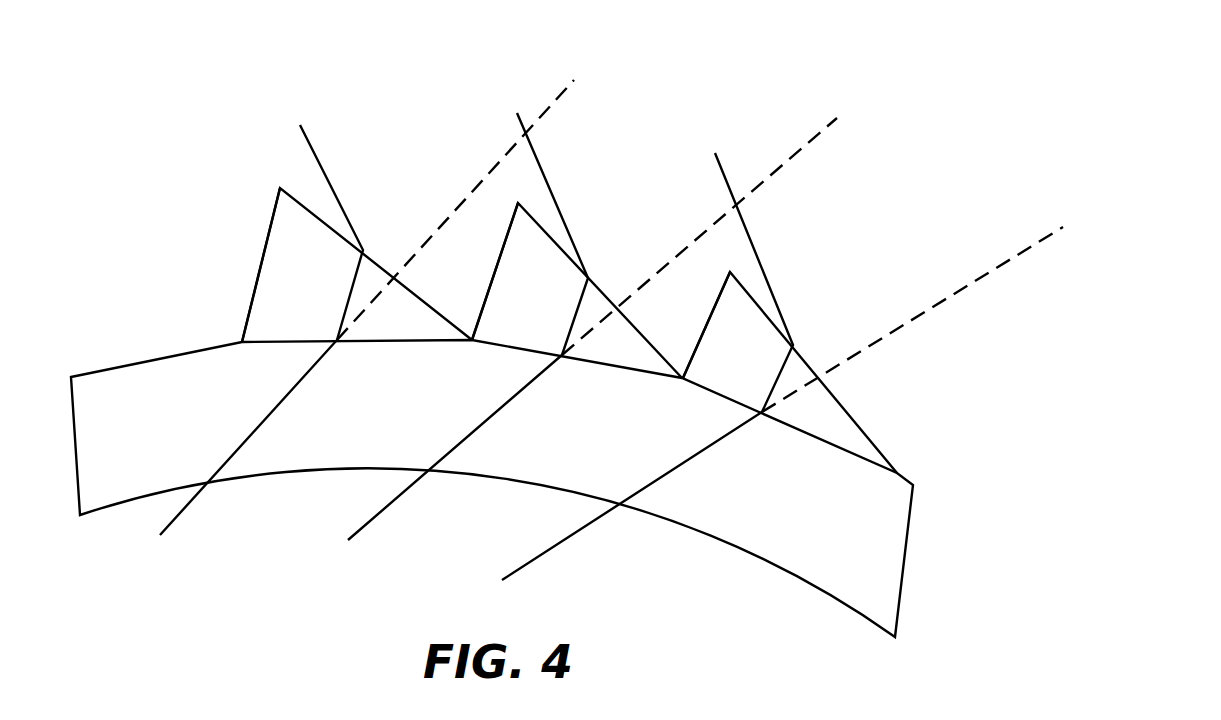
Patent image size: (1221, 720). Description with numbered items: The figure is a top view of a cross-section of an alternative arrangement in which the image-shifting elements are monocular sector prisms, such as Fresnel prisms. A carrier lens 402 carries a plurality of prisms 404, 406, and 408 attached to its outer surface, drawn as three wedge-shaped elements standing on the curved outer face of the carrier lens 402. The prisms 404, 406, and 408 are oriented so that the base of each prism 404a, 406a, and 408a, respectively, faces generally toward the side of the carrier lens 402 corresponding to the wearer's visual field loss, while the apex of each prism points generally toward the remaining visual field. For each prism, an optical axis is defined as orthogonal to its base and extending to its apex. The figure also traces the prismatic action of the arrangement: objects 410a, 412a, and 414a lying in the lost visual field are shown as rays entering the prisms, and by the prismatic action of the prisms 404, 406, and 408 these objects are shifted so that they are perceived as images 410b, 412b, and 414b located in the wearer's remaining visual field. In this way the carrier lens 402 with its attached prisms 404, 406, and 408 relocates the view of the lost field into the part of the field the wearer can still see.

The carrier lens 402 is at (840, 547).
The prism 404 is at (368, 343).
The base of prism 404a is at (253, 285).
The prism 406 is at (600, 367).
The base of prism 406a is at (488, 297).
The prism 408 is at (797, 433).
The base of prism 408a is at (700, 333).
The object 410a is at (277, 92).
The image 410b is at (602, 43).
The object 412a is at (490, 85).
The image 412b is at (863, 90).
The object 414a is at (695, 127).
The image 414b is at (1080, 203).